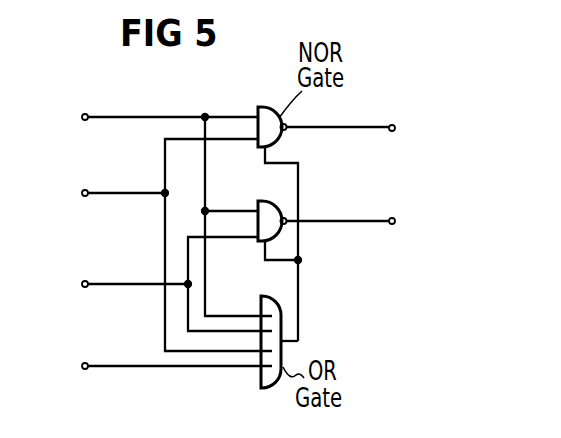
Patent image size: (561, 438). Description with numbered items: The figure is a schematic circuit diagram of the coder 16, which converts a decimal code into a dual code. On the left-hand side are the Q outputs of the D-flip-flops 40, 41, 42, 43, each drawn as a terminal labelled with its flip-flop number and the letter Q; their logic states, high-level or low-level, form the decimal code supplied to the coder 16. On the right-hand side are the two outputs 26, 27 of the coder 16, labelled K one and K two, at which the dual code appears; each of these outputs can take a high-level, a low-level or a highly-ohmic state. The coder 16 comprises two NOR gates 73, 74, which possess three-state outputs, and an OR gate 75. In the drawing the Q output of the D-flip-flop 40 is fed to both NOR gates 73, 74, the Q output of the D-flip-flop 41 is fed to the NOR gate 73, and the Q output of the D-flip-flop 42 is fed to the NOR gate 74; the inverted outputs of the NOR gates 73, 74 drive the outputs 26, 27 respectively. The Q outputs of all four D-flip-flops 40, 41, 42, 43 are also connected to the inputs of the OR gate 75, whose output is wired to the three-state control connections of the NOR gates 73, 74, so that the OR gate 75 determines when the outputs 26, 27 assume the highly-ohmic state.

The coder 16 is at (493, 190).
The output 26 is at (355, 119).
The output 27 is at (356, 214).
The D-flip-flop 40 is at (147, 207).
The D-flip-flop 41 is at (147, 245).
The D-flip-flop 42 is at (148, 284).
The D-flip-flop 43 is at (149, 372).
The NOR gate 73 is at (279, 205).
The NOR gate 74 is at (277, 212).
The OR gate 75 is at (277, 325).